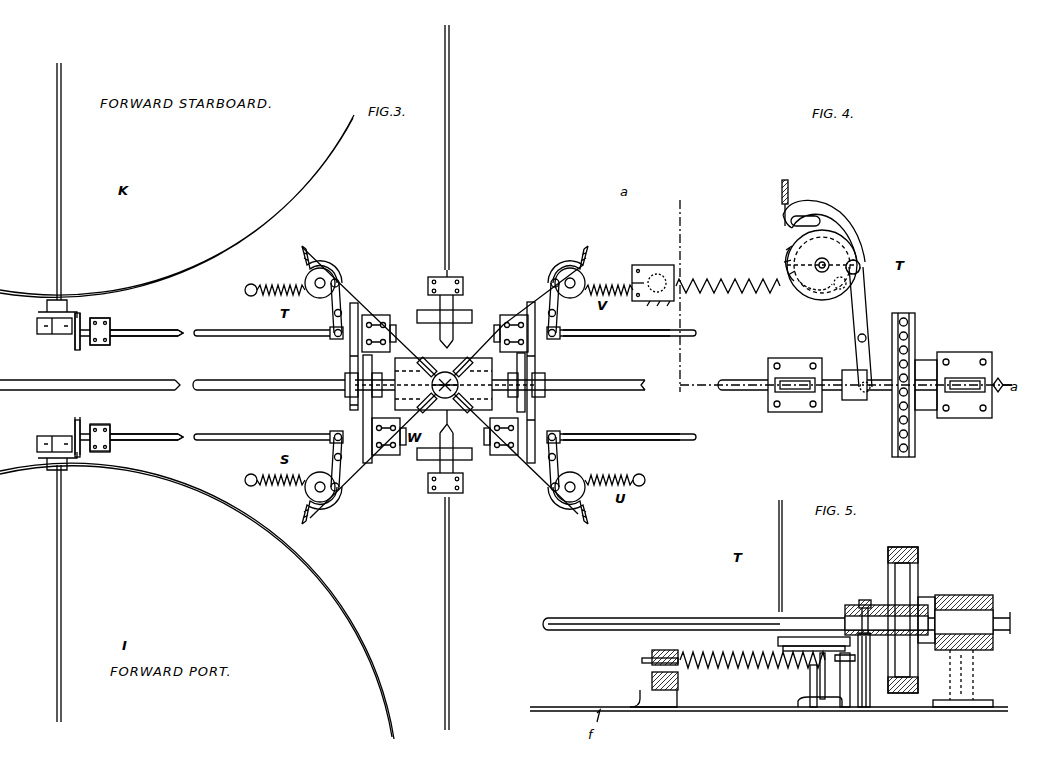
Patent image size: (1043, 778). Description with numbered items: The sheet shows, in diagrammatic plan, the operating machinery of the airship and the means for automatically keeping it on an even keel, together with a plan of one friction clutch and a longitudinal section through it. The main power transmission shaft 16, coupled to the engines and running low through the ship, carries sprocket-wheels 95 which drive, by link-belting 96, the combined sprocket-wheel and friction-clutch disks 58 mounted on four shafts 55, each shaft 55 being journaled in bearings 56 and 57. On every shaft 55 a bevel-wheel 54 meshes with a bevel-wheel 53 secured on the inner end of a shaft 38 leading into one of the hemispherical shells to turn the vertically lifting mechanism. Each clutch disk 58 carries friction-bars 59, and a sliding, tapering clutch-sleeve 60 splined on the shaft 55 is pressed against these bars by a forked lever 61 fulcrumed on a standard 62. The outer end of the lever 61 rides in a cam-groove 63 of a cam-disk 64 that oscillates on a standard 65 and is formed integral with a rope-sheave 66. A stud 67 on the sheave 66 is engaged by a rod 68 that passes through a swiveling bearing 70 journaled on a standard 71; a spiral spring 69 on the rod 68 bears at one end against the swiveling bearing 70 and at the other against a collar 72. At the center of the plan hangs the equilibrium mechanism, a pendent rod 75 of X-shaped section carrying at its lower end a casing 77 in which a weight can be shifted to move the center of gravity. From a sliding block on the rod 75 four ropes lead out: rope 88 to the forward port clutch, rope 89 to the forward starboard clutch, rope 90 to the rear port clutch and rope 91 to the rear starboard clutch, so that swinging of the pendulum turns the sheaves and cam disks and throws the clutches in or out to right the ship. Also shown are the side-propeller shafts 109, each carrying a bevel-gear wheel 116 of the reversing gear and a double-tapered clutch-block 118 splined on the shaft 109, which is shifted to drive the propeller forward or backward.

In FIG. 3, the main power transmission shaft 16 is at (252, 392).
In FIG. 3, the shaft 38 is at (62, 560).
In FIG. 3, the bevel-wheel 53 is at (37, 322).
In FIG. 3, the bevel-wheel 54 is at (70, 352).
In FIG. 3, the shaft 55 is at (186, 321).
In FIG. 4, the shaft 55 is at (827, 374).
In FIG. 5, the shaft 55 is at (708, 624).
In FIG. 3, the bearing 56 is at (112, 458).
In FIG. 3, the bearing 57 is at (377, 320).
In FIG. 4, the bearing 57 is at (974, 375).
In FIG. 5, the bearing 57 is at (972, 602).
In FIG. 3, the combined sprocket-wheel and friction-clutch disk 58 is at (355, 302).
In FIG. 4, the combined sprocket-wheel and friction-clutch disk 58 is at (915, 327).
In FIG. 5, the combined sprocket-wheel and friction-clutch disk 58 is at (921, 550).
In FIG. 5, the friction-bars 59 is at (895, 578).
In FIG. 3, the sliding tapering clutch-sleeve 60 is at (338, 342).
In FIG. 4, the sliding tapering clutch-sleeve 60 is at (851, 404).
In FIG. 5, the sliding tapering clutch-sleeve 60 is at (843, 602).
In FIG. 3, the forked lever 61 is at (334, 318).
In FIG. 4, the forked lever 61 is at (868, 311).
In FIG. 5, the forked lever 61 is at (860, 602).
In FIG. 5, the standard 62 is at (865, 707).
In FIG. 3, the cam-groove 63 is at (308, 255).
In FIG. 4, the cam-groove 63 is at (813, 218).
In FIG. 3, the cam-disk 64 is at (305, 278).
In FIG. 4, the cam-disk 64 is at (799, 246).
In FIG. 5, the cam-disk 64 is at (808, 636).
In FIG. 5, the standard 65 is at (812, 707).
In FIG. 4, the rope-sheave 66 is at (786, 263).
In FIG. 5, the rope-sheave 66 is at (783, 648).
In FIG. 4, the stud 67 is at (842, 288).
In FIG. 5, the stud 67 is at (841, 709).
In FIG. 3, the rod 68 is at (660, 272).
In FIG. 5, the rod 68 is at (637, 659).
In FIG. 3, the spiral spring 69 is at (265, 283).
In FIG. 4, the spiral spring 69 is at (705, 280).
In FIG. 5, the spiral spring 69 is at (730, 677).
In FIG. 3, the swiveling bearing 70 is at (245, 290).
In FIG. 5, the swiveling bearing 70 is at (665, 650).
In FIG. 3, the standard 71 is at (660, 310).
In FIG. 5, the standard 71 is at (648, 690).
In FIG. 4, the collar 72 is at (812, 300).
In FIG. 5, the collar 72 is at (820, 690).
In FIG. 3, the pendent rod 75 is at (90, 393).
In FIG. 3, the casing 77 is at (445, 384).
In FIG. 3, the rope 88 is at (348, 487).
In FIG. 3, the rope 89 is at (353, 274).
In FIG. 4, the rope 89 is at (777, 210).
In FIG. 5, the rope 89 is at (774, 512).
In FIG. 3, the rope 90 is at (535, 478).
In FIG. 3, the rope 91 is at (516, 296).
In FIG. 3, the sprocket-wheels 95 is at (350, 365).
In FIG. 3, the link-belting 96 is at (305, 358).
In FIG. 3, the shaft 109 is at (444, 156).
In FIG. 3, the bevel-gear wheel 116 is at (453, 330).
In FIG. 3, the clutch-block 118 is at (417, 478).